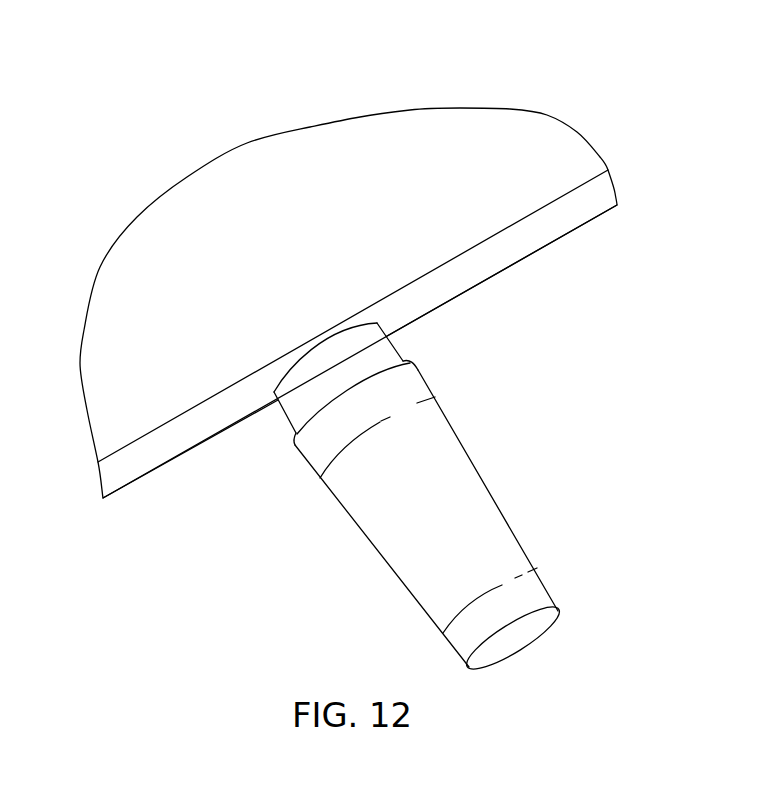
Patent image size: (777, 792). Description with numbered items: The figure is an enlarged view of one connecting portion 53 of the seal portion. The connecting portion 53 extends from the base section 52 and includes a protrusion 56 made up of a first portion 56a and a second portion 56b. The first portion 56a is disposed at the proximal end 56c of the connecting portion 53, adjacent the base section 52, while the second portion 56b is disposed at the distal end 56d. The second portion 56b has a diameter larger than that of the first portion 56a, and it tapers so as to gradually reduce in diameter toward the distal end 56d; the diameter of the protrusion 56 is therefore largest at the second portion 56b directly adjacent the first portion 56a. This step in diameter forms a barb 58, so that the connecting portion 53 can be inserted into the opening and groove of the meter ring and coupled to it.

The base section 52 is at (464, 147).
The connecting portion 53 is at (437, 500).
The protrusion 56 is at (500, 510).
The first portion 56a is at (378, 352).
The second portion 56b is at (392, 535).
The proximal end 56c is at (283, 415).
The distal end 56d is at (550, 593).
The barb 58 is at (318, 482).